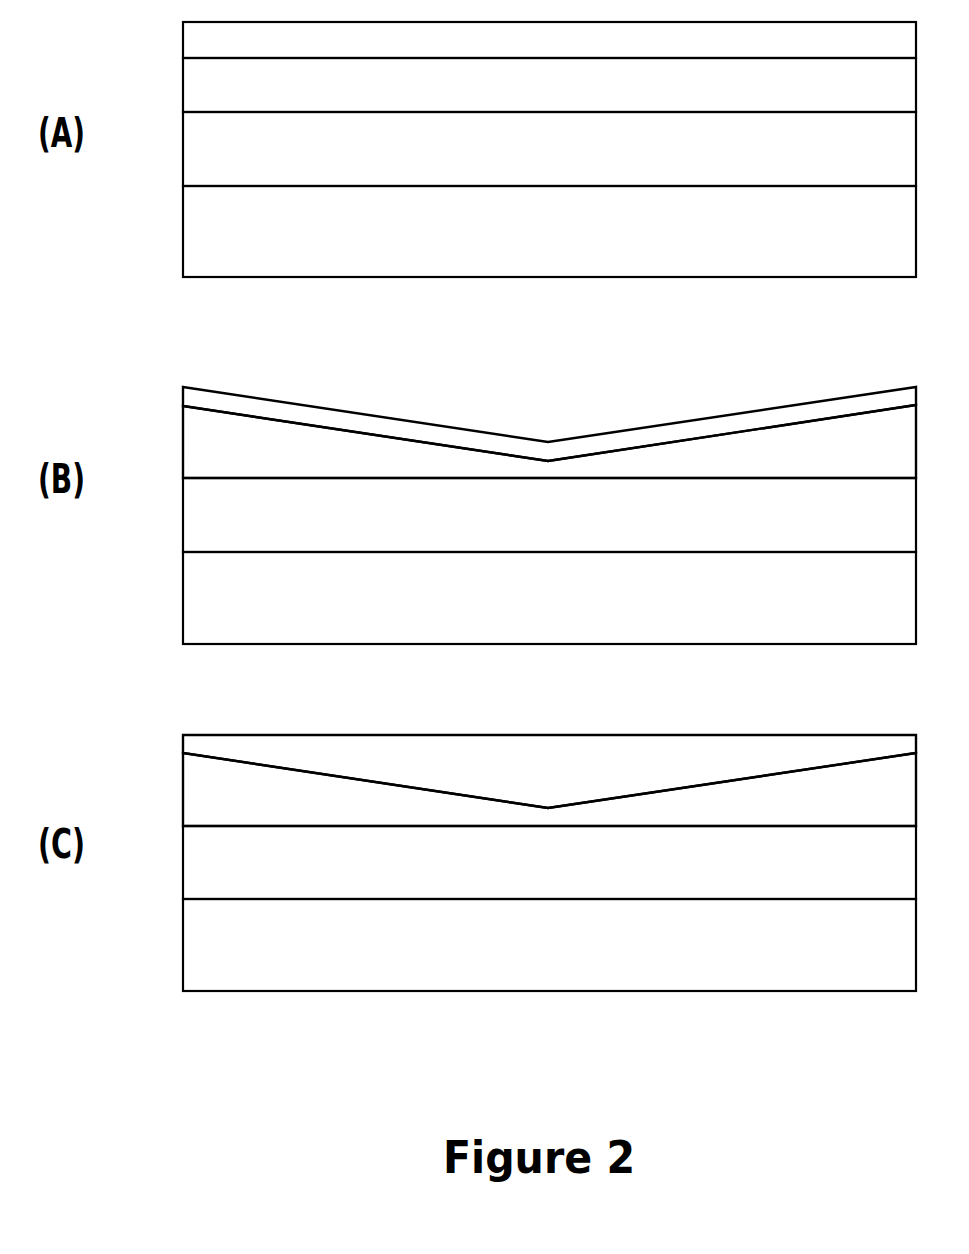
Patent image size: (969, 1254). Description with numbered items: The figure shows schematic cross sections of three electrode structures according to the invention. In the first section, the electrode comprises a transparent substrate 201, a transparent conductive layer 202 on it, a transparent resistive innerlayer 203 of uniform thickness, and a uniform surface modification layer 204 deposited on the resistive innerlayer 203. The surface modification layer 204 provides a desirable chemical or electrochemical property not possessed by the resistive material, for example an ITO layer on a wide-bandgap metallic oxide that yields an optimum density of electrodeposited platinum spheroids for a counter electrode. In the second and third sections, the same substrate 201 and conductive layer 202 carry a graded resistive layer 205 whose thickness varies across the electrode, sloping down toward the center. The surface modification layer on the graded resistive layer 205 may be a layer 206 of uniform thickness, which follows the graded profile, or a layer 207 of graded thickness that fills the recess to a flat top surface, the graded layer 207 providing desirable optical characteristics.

The transparent substrate 201 is at (263, 242).
The transparent conductive layer 202 is at (263, 160).
The transparent resistive innerlayer 203 is at (263, 99).
The uniform surface modification layer 204 is at (263, 51).
The graded resistive layer 205 is at (263, 460).
The surface modification layer of uniform thickness 206 is at (347, 422).
The surface modification layer of graded thickness 207 is at (423, 767).